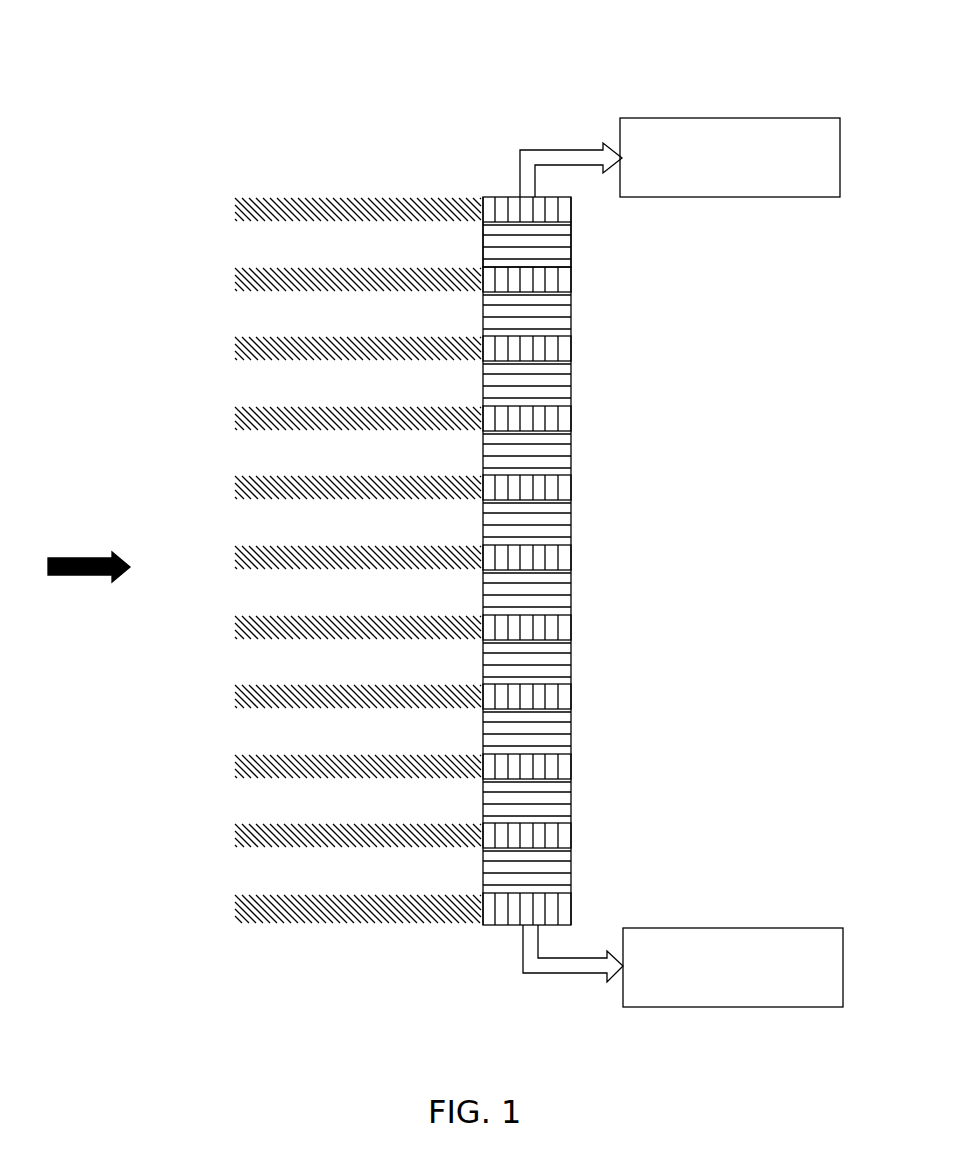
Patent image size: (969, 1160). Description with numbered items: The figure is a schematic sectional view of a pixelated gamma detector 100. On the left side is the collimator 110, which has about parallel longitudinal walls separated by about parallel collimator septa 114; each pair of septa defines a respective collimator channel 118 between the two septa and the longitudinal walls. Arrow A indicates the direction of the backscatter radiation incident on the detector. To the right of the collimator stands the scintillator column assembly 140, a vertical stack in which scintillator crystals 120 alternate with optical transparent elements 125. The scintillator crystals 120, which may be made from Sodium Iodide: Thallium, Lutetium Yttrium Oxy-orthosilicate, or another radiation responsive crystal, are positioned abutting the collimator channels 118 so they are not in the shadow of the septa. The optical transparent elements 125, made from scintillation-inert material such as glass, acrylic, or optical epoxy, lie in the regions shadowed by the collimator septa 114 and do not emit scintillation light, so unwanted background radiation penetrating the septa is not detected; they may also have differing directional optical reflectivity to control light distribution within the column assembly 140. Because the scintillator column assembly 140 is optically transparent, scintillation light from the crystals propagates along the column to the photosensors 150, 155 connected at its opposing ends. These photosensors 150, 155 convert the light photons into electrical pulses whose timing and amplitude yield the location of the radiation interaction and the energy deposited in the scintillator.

The pixelated gamma detector 100 is at (634, 61).
The collimator 110 is at (483, 988).
The collimator septum 114 is at (236, 766).
The collimator channel 118 is at (236, 311).
The scintillator crystals 120 is at (565, 314).
The optical transparent elements 125 is at (564, 279).
The scintillator column assembly 140 is at (573, 988).
The photosensor 150 is at (732, 928).
The photosensor 155 is at (731, 197).